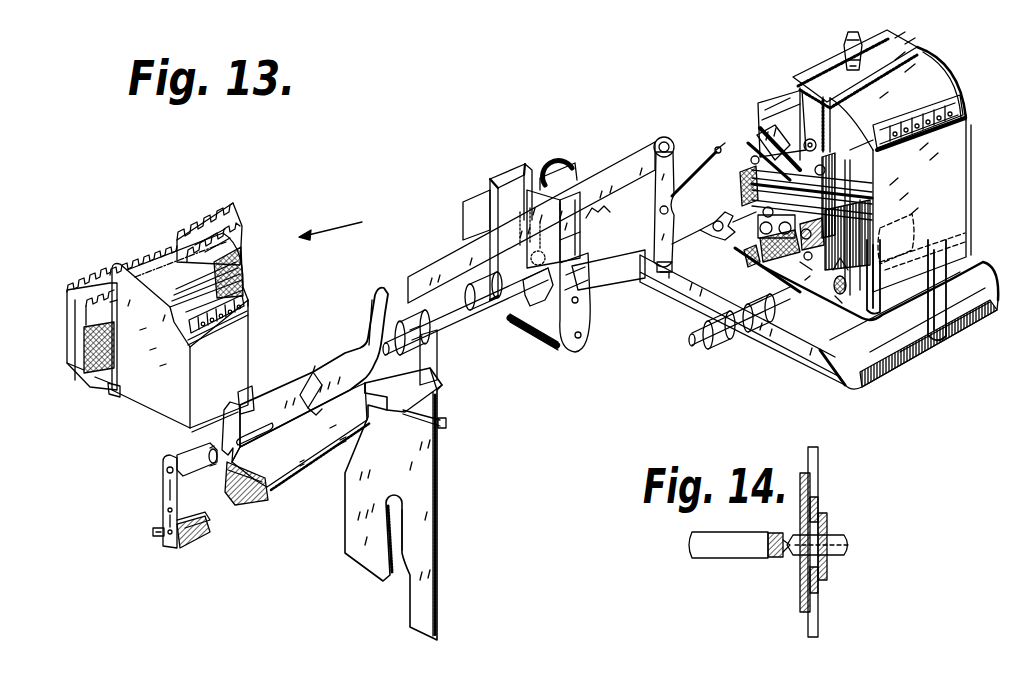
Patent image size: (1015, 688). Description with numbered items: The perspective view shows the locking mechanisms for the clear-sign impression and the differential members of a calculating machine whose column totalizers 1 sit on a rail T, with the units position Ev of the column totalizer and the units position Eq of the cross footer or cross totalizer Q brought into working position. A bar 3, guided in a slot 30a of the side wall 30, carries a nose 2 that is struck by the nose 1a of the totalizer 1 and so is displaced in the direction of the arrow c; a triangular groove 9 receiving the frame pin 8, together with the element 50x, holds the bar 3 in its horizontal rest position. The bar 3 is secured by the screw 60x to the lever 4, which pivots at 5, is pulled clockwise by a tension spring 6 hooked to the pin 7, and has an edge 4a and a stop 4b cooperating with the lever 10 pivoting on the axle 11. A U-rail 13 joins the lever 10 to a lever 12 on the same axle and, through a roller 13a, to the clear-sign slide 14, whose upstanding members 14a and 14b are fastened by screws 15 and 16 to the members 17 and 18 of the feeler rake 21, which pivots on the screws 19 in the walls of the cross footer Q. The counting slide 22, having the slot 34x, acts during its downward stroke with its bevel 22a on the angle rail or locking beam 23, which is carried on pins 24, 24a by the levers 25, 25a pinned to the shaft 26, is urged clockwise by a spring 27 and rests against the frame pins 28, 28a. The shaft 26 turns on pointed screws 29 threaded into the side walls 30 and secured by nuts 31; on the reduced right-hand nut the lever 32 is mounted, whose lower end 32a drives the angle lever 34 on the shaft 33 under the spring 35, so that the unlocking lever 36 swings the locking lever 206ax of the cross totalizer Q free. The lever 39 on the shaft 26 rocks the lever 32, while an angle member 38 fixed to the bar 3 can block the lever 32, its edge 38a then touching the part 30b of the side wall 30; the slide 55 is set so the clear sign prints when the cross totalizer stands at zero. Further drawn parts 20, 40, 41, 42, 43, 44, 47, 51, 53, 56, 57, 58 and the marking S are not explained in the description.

In FIG. 13, the column totalizer 1 is at (242, 342).
In FIG. 13, the nose 1a is at (246, 398).
In FIG. 13, the projection or lug 2 is at (226, 420).
In FIG. 13, the bar 3 is at (360, 362).
In FIG. 13, the lever 4 is at (656, 190).
In FIG. 13, the edge 4a is at (668, 262).
In FIG. 13, the stop 4b is at (672, 277).
In FIG. 13, the swinging axis 5 is at (658, 210).
In FIG. 13, the tension spring 6 is at (694, 180).
In FIG. 13, the pin 7 is at (717, 147).
In FIG. 13, the pin 8 is at (316, 418).
In FIG. 13, the triangular groove 9 is at (313, 372).
In FIG. 13, the lever 10 is at (672, 300).
In FIG. 13, the axle 11 is at (688, 340).
In FIG. 13, the lever 12 is at (972, 283).
In FIG. 13, the U-rail 13 is at (892, 374).
In FIG. 13, the roller 13a is at (930, 348).
In FIG. 13, the slide 14 is at (932, 315).
In FIG. 13, the upwardly extending member 14a is at (866, 305).
In FIG. 13, the upwardly extending member 14b is at (885, 295).
In FIG. 13, the screw 15 is at (858, 205).
In FIG. 13, the screw 16 is at (909, 208).
In FIG. 13, the member 17 is at (836, 186).
In FIG. 13, the member 18 is at (884, 190).
In FIG. 13, the screw 19 is at (751, 160).
In FIG. 13, the pin 20 is at (738, 170).
In FIG. 13, the feeler rake 21 is at (757, 133).
In FIG. 13, the counting slide 22 is at (430, 479).
In FIG. 13, the bevel 22a is at (375, 440).
In FIG. 13, the angle rail 23 is at (205, 520).
In FIG. 13, the pin 24 is at (183, 545).
In FIG. 13, the pin 24a is at (222, 565).
In FIG. 13, the lever 25 is at (163, 492).
In FIG. 13, the lever 25a is at (437, 357).
In FIG. 13, the shaft 26 is at (210, 462).
In FIG. 14, the shaft 26 is at (727, 550).
In FIG. 13, the spring 27 is at (436, 375).
In FIG. 13, the pin 28 is at (153, 533).
In FIG. 13, the pin 28a is at (144, 552).
In FIG. 14, the pointed screw 29 is at (826, 540).
In FIG. 13, the side wall 30 is at (580, 222).
In FIG. 14, the side wall 30 is at (801, 594).
In FIG. 13, the slot 30a is at (580, 240).
In FIG. 13, the part 30b is at (545, 176).
In FIG. 14, the nut 31 is at (826, 560).
In FIG. 13, the lever 32 is at (492, 188).
In FIG. 14, the lever 32 is at (818, 463).
In FIG. 13, the lower end 32a is at (535, 290).
In FIG. 13, the shaft 33 is at (612, 283).
In FIG. 13, the angle lever 34 is at (586, 310).
In FIG. 13, the slot 34x is at (403, 548).
In FIG. 13, the spring 35 is at (541, 340).
In FIG. 13, the unlocking lever 36 is at (725, 245).
In FIG. 13, the angle member 38 is at (566, 172).
In FIG. 13, the edge 38a is at (580, 205).
In FIG. 13, the lever 39 is at (462, 283).
In FIG. 13, the pin 40 is at (817, 145).
In FIG. 13, the pin 41 is at (849, 155).
In FIG. 13, the cover 42 is at (838, 63).
In FIG. 13, the knob 43 is at (844, 42).
In FIG. 13, the lever 44 is at (826, 170).
In FIG. 13, the roller 47 is at (770, 235).
In FIG. 13, the element 50x is at (253, 440).
In FIG. 13, the roller 51 is at (790, 235).
In FIG. 13, the pin 53 is at (764, 212).
In FIG. 13, the slide 55 is at (811, 238).
In FIG. 13, the bracket 56 is at (742, 185).
In FIG. 13, the pin 57 is at (810, 262).
In FIG. 13, the cam 58 is at (838, 276).
In FIG. 13, the screw 60x is at (666, 145).
In FIG. 13, the locking lever 206ax is at (752, 262).
In FIG. 13, the display S is at (919, 112).
In FIG. 13, the units position Eq is at (945, 105).
In FIG. 13, the units position Ev is at (243, 303).
In FIG. 13, the cross footer Q is at (968, 122).
In FIG. 13, the rail T is at (226, 210).
In FIG. 13, the arrow c is at (330, 221).